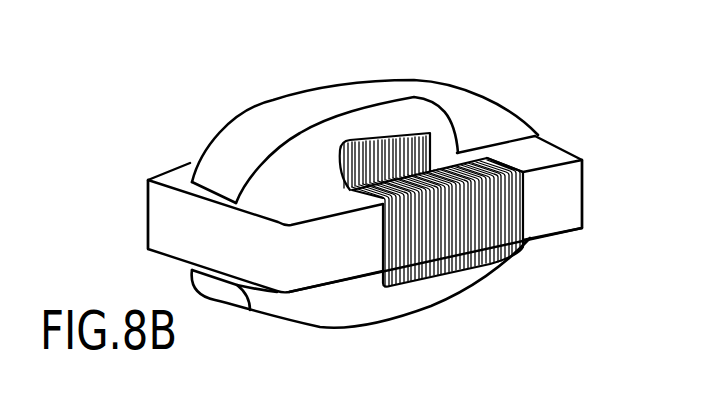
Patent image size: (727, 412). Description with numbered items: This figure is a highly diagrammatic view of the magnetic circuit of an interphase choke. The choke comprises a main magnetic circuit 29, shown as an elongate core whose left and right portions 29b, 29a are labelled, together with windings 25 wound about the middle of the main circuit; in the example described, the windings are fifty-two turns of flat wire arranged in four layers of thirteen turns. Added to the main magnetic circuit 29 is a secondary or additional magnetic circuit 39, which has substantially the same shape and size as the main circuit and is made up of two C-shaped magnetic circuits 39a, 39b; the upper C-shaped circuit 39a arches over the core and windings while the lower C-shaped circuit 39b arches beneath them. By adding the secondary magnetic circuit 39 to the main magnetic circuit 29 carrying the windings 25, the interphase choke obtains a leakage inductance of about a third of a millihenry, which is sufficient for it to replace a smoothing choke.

The windings 25 is at (447, 237).
The main magnetic circuit 29 is at (551, 156).
The core block right portion 29a is at (565, 216).
The core block left portion 29b is at (162, 204).
The secondary magnetic circuit 39 is at (365, 104).
The C-shaped magnetic circuit 39a is at (280, 116).
The C-shaped magnetic circuit 39b is at (414, 307).